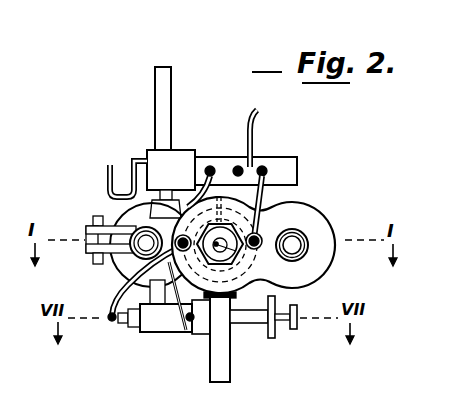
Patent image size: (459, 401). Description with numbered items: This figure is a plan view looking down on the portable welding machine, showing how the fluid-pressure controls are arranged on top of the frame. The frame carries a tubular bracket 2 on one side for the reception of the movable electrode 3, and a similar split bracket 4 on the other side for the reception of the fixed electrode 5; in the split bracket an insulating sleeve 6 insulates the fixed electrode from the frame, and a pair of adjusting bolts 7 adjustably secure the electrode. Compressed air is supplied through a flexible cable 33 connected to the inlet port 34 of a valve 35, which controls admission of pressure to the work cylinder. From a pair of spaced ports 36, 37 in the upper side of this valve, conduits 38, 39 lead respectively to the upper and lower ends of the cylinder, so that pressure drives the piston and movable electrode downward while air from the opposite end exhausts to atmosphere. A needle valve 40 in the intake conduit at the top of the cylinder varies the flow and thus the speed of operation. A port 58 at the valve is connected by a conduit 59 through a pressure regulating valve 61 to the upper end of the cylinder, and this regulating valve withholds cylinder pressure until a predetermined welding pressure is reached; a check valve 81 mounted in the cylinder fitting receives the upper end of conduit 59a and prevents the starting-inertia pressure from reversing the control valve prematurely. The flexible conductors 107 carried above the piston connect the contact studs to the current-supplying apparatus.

The tubular bracket 2 is at (323, 221).
The movable electrode 3 is at (306, 240).
The split bracket 4 is at (95, 246).
The fixed electrode 5 is at (140, 230).
The insulating sleeve 6 is at (114, 228).
The adjusting bolts 7 is at (95, 225).
The flexible cable 33 is at (258, 111).
The inlet port 34 is at (253, 167).
The valve 35 is at (153, 146).
The port 36 is at (266, 166).
The port 37 is at (256, 163).
The conduit 38 is at (266, 207).
The conduit 39 is at (225, 182).
The needle valve 40 is at (297, 242).
The port 58 is at (211, 166).
The conduit 59 is at (186, 192).
The conduit 59a is at (113, 298).
The pressure regulating valve 61 is at (183, 338).
The check valve 81 is at (152, 245).
The flexible conductors 107 is at (236, 251).